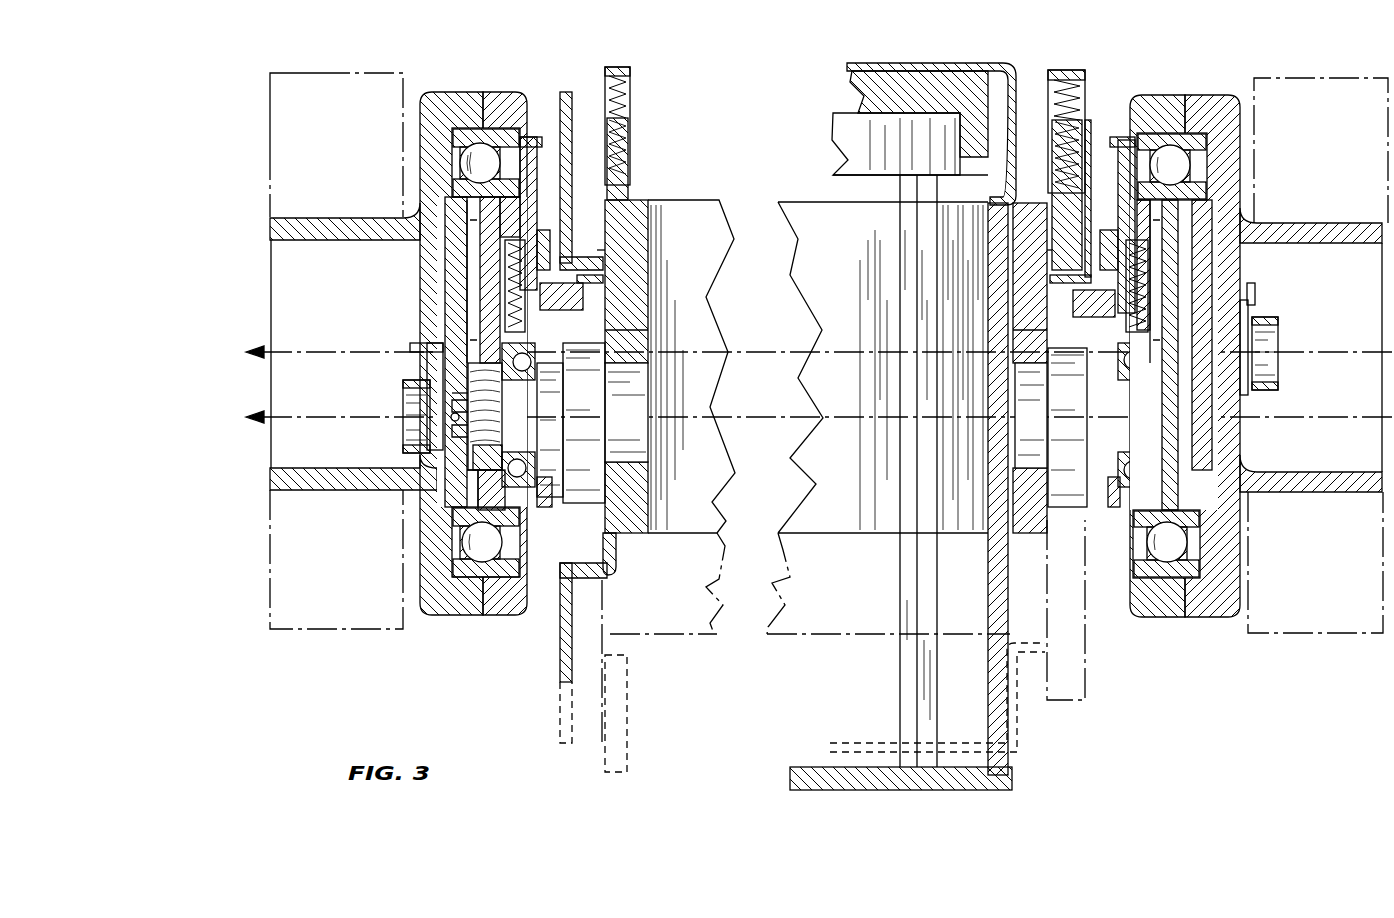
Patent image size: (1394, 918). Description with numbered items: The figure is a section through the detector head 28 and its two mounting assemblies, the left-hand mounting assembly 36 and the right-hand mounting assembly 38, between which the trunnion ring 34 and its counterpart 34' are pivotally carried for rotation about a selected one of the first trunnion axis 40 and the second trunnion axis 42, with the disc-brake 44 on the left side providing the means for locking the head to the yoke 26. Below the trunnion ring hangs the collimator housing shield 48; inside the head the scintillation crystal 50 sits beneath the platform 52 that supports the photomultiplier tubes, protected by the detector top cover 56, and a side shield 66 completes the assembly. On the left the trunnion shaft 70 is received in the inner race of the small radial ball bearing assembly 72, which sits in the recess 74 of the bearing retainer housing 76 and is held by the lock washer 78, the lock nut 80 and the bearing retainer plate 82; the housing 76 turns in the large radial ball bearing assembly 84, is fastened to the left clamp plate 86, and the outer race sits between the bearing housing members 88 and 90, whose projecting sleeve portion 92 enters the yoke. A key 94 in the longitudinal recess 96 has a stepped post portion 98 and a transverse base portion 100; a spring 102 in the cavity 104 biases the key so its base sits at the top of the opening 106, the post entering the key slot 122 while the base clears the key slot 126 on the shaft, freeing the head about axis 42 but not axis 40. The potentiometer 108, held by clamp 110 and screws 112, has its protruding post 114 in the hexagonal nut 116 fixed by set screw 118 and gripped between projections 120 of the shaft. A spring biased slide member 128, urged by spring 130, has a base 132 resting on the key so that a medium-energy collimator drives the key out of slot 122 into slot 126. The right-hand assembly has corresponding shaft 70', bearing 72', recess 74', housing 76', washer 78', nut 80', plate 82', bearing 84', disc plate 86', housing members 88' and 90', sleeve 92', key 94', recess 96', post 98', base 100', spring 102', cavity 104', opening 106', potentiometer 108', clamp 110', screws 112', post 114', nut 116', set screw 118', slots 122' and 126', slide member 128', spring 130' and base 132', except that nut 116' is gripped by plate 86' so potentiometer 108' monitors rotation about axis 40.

The yoke 26 is at (330, 74).
The detector head 28 is at (918, 58).
The trunnion ring 34 is at (641, 369).
The housing 34' is at (1000, 368).
The left-hand mounting assembly 36 is at (455, 351).
The right-hand mounting assembly 38 is at (1199, 327).
The first trunnion axis 40 is at (286, 338).
The second trunnion axis 42 is at (288, 410).
The disc-brake 44 is at (566, 92).
The collimator housing shield 48 is at (957, 71).
The scintillation crystal 50 is at (857, 162).
The platform 52 is at (907, 588).
The detector top cover 56 is at (1012, 780).
The side shield 66 is at (1010, 753).
The trunnion shaft 70 is at (670, 417).
The trunnion shaft 70' is at (1000, 415).
The small radial ball bearing assembly 72 is at (564, 423).
The small radial ball bearing assembly 72' is at (1080, 427).
The recess 74 is at (536, 437).
The recess 74' is at (1100, 445).
The bearing retainer housing 76 is at (442, 352).
The bearing retainer housing 76' is at (1218, 355).
The lock washer 78 is at (422, 498).
The lock washer 78' is at (1225, 505).
The lock nut 80 is at (436, 483).
The lock nut 80' is at (1221, 489).
The bearing retainer plate 82 is at (548, 518).
The bearing retainer plate 82' is at (1085, 492).
The large radial ball bearing assembly 84 is at (443, 352).
The large radial ball bearing assembly 84' is at (1212, 360).
The left clamp plate 86 is at (448, 280).
The disc plate 86' is at (1215, 248).
The bearing housing member 88 is at (490, 372).
The bearing housing member 88' is at (1157, 340).
The bearing housing member 90 is at (433, 375).
The bearing housing member 90' is at (1212, 337).
The projecting sleeve portion 92 is at (353, 462).
The projecting sleeve portion 92' is at (1311, 465).
The key 94 is at (557, 182).
The key 94' is at (1113, 226).
The longitudinal recess 96 is at (442, 215).
The longitudinal recess 96' is at (1245, 330).
The stepped post portion 98 is at (565, 226).
The stepped post portion 98' is at (1104, 237).
The transverse base portion 100 is at (614, 290).
The transverse base portion 100' is at (1031, 303).
The spring 102 is at (446, 281).
The spring 102' is at (1210, 281).
The cavity 104 is at (458, 286).
The cavity 104' is at (1099, 311).
The opening 106 is at (642, 239).
The opening 106' is at (1012, 257).
The potentiometer 108 is at (389, 414).
The potentiometer 108' is at (1293, 348).
The clamp 110 is at (406, 396).
The clamp 110' is at (1268, 344).
The screws 112 is at (404, 339).
The screws 112' is at (1280, 289).
The protruding post 114 is at (427, 416).
The protruding post 114' is at (1235, 415).
The hexagonal nut 116 is at (493, 399).
The hexagonal nut 116' is at (1233, 414).
The set screw 118 is at (493, 426).
The set screw 118' is at (1233, 396).
The projections 120 is at (453, 393).
The key slot 122 is at (511, 99).
The key slot 122' is at (1113, 123).
The key slot 126 is at (646, 317).
The key slot 126' is at (1003, 333).
The slide member 128 is at (641, 406).
The slide member 128' is at (1071, 387).
The spring 130 is at (644, 97).
The spring 130' is at (1092, 87).
The base 132 is at (632, 264).
The base 132' is at (1021, 206).